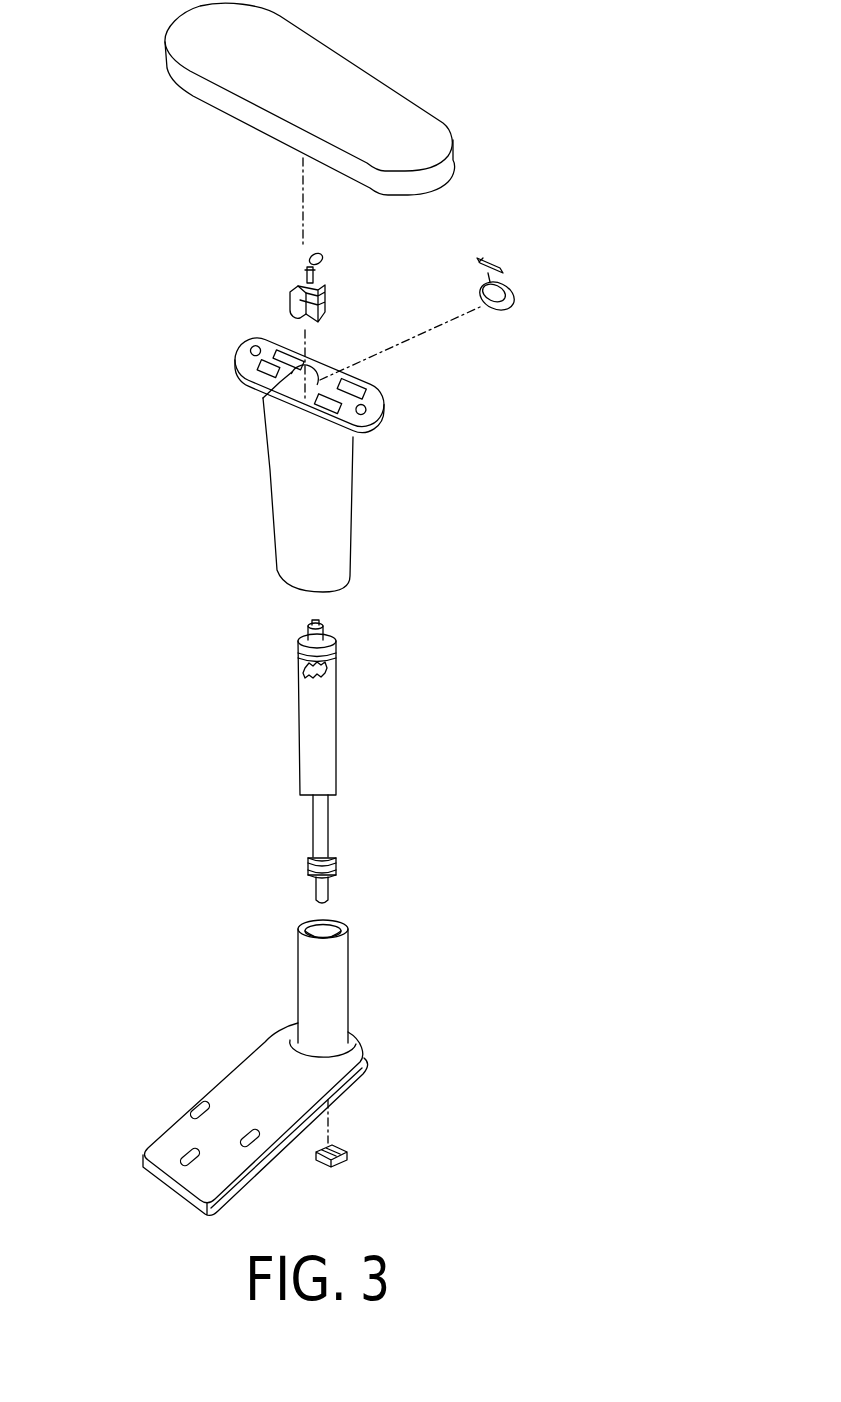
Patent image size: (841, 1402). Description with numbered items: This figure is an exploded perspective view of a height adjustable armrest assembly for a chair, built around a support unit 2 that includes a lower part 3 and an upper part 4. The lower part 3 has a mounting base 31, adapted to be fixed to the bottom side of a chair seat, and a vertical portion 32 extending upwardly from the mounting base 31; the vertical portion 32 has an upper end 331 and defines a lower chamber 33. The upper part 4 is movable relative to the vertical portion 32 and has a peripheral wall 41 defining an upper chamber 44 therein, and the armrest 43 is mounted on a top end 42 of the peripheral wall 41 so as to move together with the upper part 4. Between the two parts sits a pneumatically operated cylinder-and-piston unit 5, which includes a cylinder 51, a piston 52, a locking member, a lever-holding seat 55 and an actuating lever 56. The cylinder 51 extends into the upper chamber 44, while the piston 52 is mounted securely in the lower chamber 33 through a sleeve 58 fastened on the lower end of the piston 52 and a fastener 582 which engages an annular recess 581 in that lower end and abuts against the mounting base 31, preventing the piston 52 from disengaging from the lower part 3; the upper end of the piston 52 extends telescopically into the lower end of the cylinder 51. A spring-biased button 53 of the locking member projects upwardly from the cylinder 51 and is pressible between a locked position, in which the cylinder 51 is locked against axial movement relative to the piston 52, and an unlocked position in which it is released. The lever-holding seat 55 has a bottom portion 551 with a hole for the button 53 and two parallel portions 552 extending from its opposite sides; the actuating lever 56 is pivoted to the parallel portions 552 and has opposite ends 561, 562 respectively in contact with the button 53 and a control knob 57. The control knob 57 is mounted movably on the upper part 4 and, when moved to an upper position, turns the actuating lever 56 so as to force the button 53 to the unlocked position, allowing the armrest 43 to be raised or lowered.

The support unit 2 is at (383, 512).
The lower part 3 is at (363, 1072).
The mounting base 31 is at (190, 1130).
The vertical portion 32 is at (325, 1005).
The lower chamber 33 is at (337, 925).
The upper end 331 is at (323, 930).
The upper part 4 is at (272, 502).
The peripheral wall 41 is at (285, 432).
The top end 42 is at (238, 352).
The armrest 43 is at (397, 115).
The upper chamber 44 is at (265, 410).
The cylinder-and-piston unit 5 is at (337, 700).
The cylinder 51 is at (320, 725).
The piston 52 is at (328, 818).
The spring-biased button 53 is at (360, 621).
The lever-holding seat 55 is at (295, 288).
The bottom portion 551 is at (312, 323).
The parallel portions 552 is at (292, 303).
The actuating lever 56 is at (323, 258).
The end of actuating lever 561 is at (305, 268).
The end of actuating lever 562 is at (317, 252).
The control knob 57 is at (513, 298).
The sleeve 58 is at (310, 865).
The annular recess 581 is at (317, 903).
The fastener 582 is at (347, 1158).